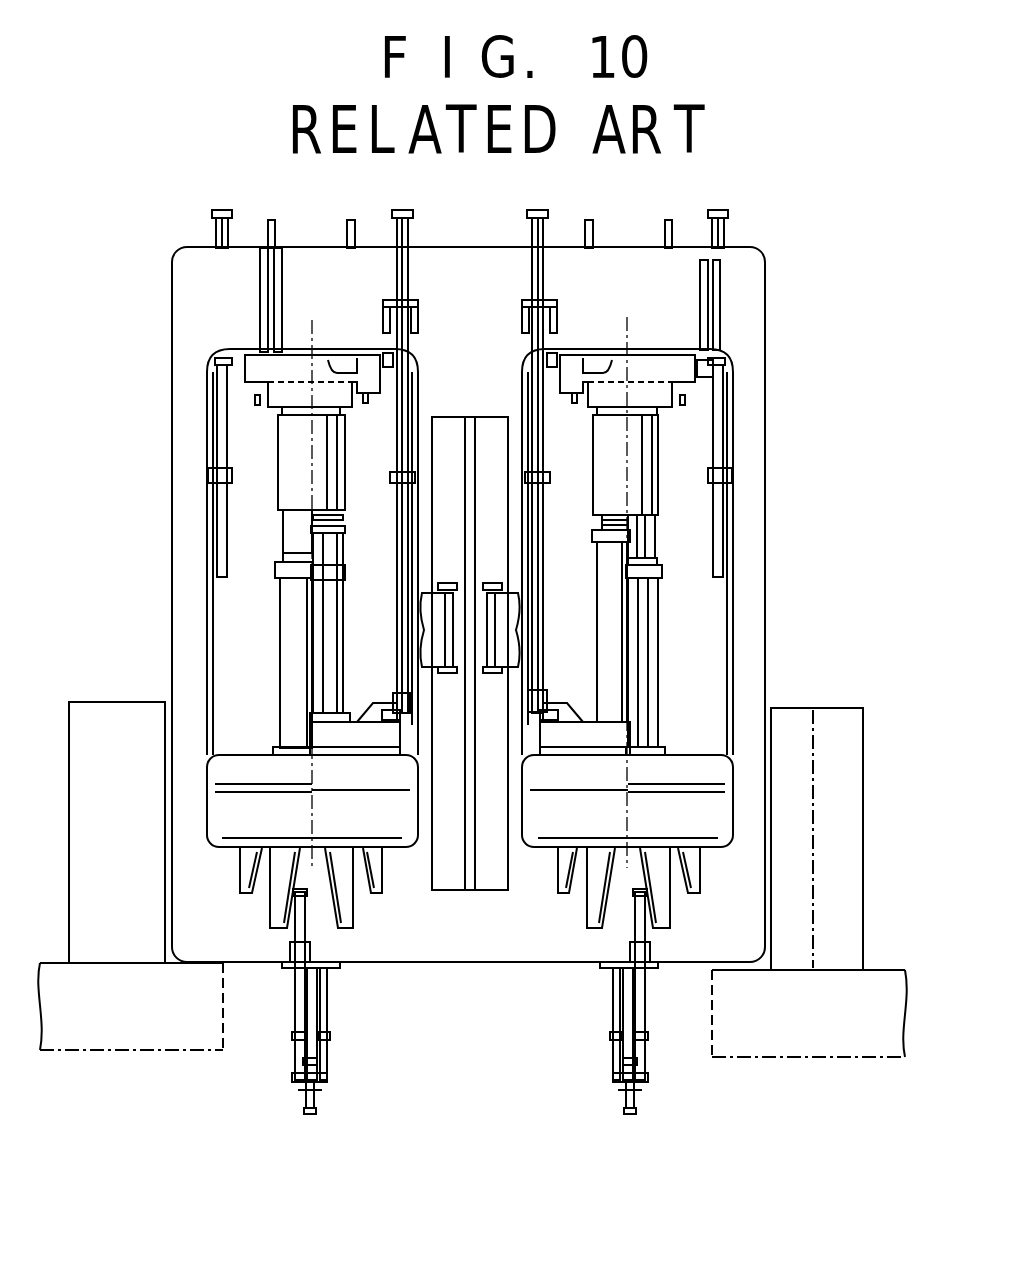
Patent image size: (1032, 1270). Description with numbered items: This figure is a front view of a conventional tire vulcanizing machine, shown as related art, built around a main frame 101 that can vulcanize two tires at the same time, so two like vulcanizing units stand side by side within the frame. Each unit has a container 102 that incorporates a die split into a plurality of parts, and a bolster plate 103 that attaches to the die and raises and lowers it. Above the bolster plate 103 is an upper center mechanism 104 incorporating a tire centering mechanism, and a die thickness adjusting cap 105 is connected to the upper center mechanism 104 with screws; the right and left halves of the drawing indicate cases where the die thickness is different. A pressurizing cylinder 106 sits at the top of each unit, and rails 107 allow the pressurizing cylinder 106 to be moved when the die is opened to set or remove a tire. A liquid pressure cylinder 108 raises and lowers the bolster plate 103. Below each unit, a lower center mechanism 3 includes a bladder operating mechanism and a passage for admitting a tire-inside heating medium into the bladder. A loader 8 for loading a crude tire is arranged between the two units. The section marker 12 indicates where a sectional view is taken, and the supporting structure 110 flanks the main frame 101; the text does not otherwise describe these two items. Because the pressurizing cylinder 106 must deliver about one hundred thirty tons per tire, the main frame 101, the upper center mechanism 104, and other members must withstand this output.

The lower center mechanism 3 is at (612, 1003).
The loader 8 is at (460, 913).
The section line 12 is at (312, 322).
The main frame 101 is at (512, 943).
The container 102 is at (717, 815).
The bolster plate 103 is at (703, 770).
The upper center mechanism 104 is at (652, 633).
The die thickness adjusting cap 105 is at (650, 500).
The pressurizing cylinder 106 is at (660, 413).
The rails 107 is at (693, 402).
The liquid pressure cylinder 108 is at (528, 350).
The support pillar 110 is at (900, 888).